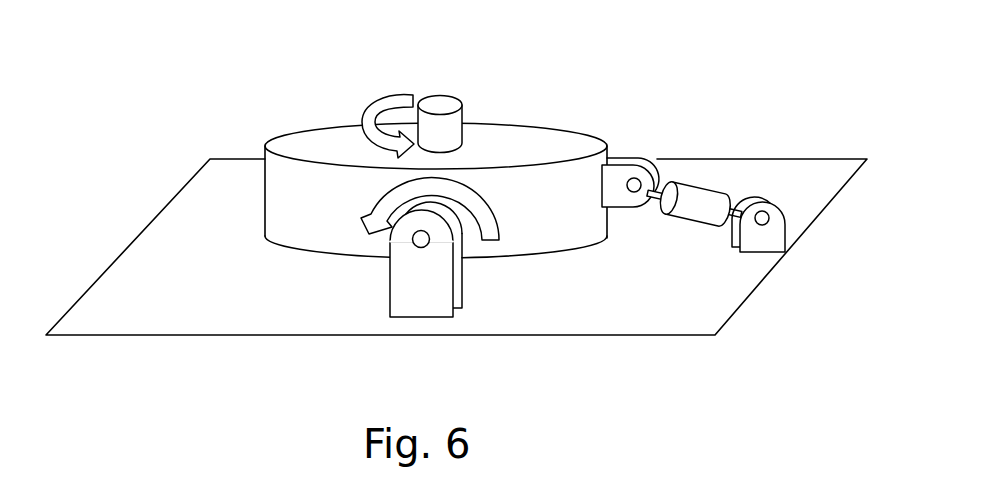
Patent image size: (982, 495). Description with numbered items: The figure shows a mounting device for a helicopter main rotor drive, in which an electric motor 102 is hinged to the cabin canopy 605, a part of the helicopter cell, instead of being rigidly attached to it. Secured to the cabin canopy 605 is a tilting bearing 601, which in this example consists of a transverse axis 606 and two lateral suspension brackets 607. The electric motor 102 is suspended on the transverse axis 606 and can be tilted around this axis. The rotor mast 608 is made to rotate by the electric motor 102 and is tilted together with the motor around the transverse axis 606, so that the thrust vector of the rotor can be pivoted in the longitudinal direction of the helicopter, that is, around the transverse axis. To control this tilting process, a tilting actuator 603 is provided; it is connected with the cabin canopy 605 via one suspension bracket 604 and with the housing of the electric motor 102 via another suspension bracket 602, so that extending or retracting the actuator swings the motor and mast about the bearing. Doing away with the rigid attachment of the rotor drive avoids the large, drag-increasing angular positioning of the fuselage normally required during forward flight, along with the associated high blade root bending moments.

The electric motor 102 is at (318, 148).
The tilting bearing 601 is at (417, 292).
The suspension bracket 602 is at (632, 162).
The tilting actuator 603 is at (698, 207).
The suspension bracket 604 is at (770, 233).
The cabin canopy 605 is at (158, 258).
The transverse axis 606 is at (408, 240).
The lateral suspension brackets 607 is at (412, 239).
The rotor mast 608 is at (442, 107).